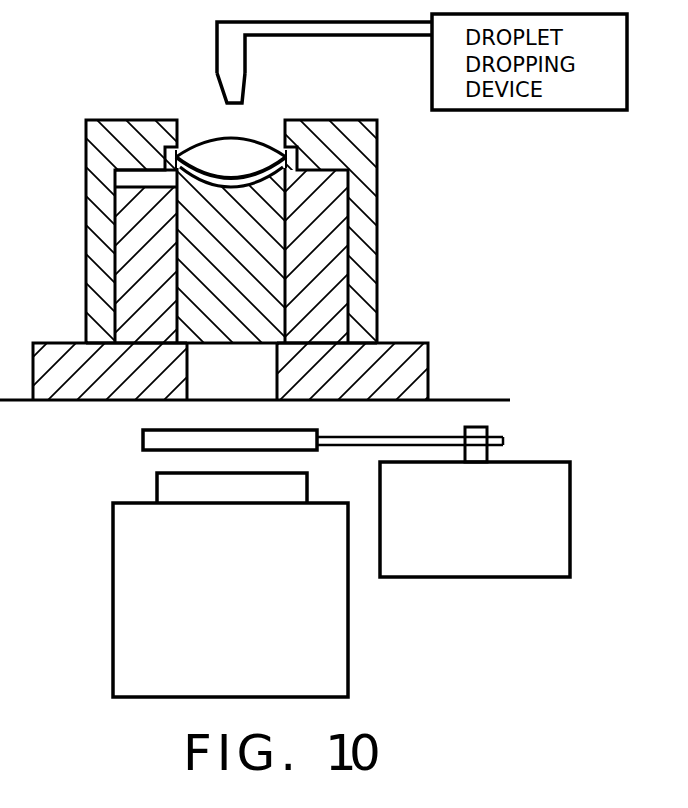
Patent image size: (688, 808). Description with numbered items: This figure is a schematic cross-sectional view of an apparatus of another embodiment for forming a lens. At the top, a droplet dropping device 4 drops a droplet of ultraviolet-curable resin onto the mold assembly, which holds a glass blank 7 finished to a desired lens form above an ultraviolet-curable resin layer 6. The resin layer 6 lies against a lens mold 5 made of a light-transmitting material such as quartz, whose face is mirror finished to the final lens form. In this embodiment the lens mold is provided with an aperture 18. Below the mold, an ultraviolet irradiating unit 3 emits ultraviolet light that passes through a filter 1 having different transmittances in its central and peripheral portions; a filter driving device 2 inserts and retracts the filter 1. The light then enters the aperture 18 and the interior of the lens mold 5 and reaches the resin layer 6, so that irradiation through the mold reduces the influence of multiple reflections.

The filter 1 is at (143, 440).
The filter driving device 2 is at (483, 577).
The ultraviolet irradiating device 3 is at (348, 642).
The droplet dropping device 4 is at (228, 47).
The lens mold 5 is at (198, 262).
The ultraviolet-curable resin layer 6 is at (205, 182).
The glass blank 7 is at (210, 147).
The aperture 18 is at (210, 388).